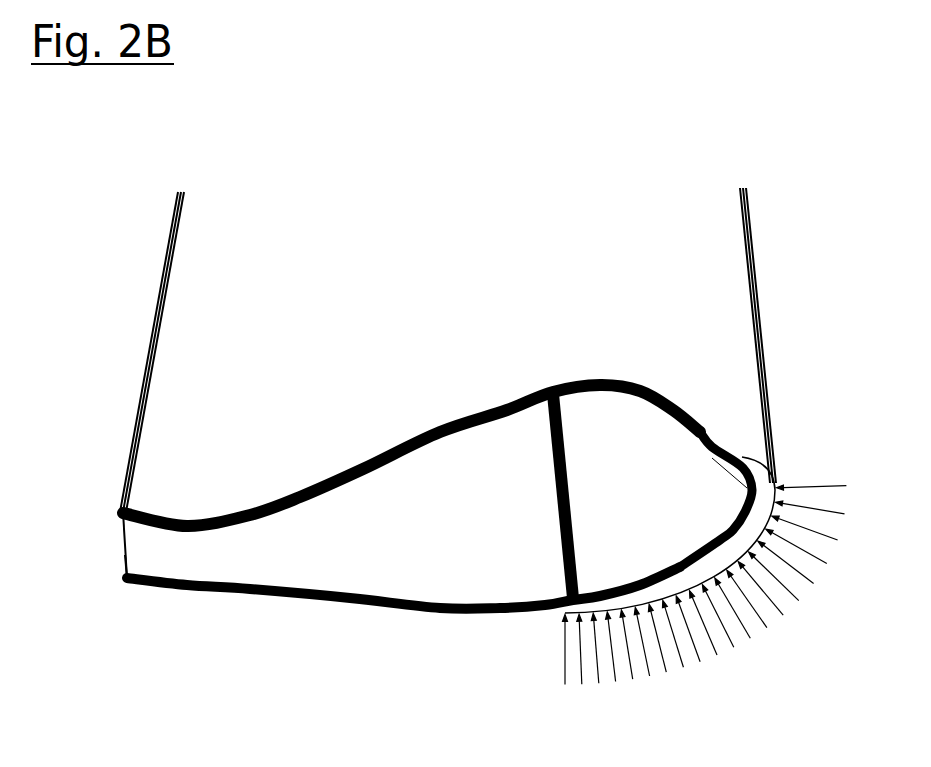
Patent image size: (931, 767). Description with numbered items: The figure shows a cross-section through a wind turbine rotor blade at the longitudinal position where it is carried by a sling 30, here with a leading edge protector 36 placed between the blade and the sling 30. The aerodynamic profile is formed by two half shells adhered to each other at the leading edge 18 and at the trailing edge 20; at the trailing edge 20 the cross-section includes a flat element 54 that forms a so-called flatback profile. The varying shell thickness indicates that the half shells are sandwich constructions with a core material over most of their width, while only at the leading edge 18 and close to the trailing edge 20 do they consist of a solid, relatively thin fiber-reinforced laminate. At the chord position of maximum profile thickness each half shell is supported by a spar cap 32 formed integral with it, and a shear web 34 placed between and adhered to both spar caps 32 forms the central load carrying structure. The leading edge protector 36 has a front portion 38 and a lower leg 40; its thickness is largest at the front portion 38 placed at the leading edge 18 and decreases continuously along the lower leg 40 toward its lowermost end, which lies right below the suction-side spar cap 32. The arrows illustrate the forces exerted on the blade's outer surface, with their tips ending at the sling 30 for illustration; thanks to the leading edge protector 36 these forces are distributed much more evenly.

The leading edge 18 is at (396, 464).
The trailing edge 20 is at (120, 548).
The sling 30 is at (166, 325).
The spar cap 32 is at (503, 423).
The shear web 34 is at (573, 523).
The leading edge protector 36 is at (748, 516).
The front portion 38 is at (777, 488).
The lower leg 40 is at (737, 630).
The flat element 54 is at (123, 565).